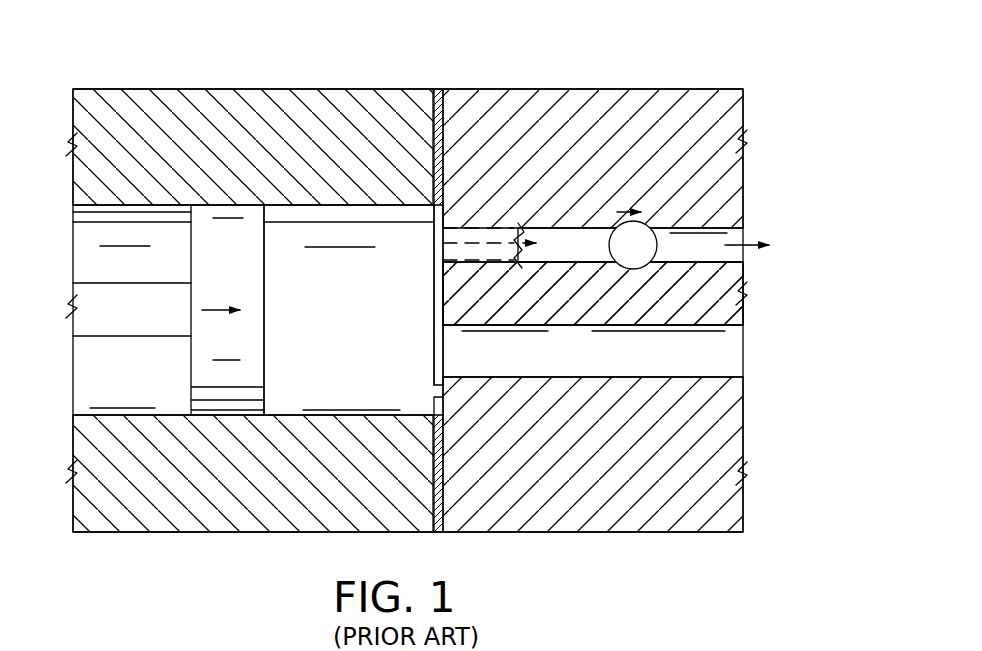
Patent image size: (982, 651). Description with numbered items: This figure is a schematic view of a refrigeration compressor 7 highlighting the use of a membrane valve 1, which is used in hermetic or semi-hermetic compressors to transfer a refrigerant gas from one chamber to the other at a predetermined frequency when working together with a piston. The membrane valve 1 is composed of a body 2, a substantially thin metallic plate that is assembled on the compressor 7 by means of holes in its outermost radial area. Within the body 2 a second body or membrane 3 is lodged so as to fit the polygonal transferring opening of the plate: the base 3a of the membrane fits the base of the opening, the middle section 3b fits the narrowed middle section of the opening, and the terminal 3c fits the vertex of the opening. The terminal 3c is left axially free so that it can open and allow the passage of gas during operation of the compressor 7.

The compressor 7 is at (288, 52).
The body 2 is at (432, 118).
The membrane 3 is at (422, 353).
The base 3a is at (443, 172).
The middle section 3b is at (434, 250).
The terminal 3c is at (438, 373).
The membrane valve 1 is at (403, 318).